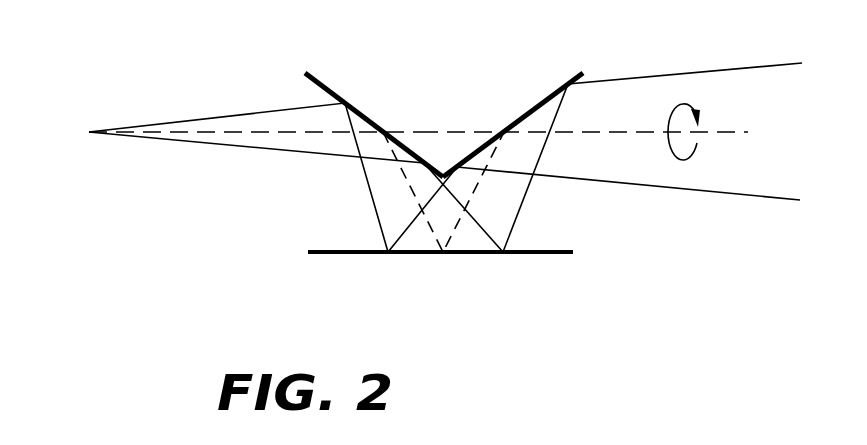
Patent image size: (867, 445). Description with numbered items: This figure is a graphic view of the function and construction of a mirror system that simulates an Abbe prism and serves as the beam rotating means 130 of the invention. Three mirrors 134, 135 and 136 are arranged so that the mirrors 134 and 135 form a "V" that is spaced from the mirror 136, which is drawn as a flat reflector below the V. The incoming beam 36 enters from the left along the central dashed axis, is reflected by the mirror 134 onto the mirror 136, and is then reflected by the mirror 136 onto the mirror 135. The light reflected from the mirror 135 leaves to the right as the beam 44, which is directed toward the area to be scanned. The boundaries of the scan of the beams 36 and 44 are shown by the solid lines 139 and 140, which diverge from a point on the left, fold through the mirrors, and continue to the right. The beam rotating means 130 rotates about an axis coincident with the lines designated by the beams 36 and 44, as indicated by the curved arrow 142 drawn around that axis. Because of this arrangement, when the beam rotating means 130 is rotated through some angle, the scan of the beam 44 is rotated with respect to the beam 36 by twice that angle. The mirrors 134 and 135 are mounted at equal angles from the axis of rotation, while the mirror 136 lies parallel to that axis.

The beam 36 is at (298, 135).
The beam 44 is at (623, 129).
The beam rotating means 130 is at (558, 260).
The mirror 134 is at (348, 104).
The mirror 135 is at (541, 103).
The mirror 136 is at (413, 255).
The solid line 139 is at (236, 114).
The solid line 140 is at (232, 148).
The arrow 142 is at (688, 103).